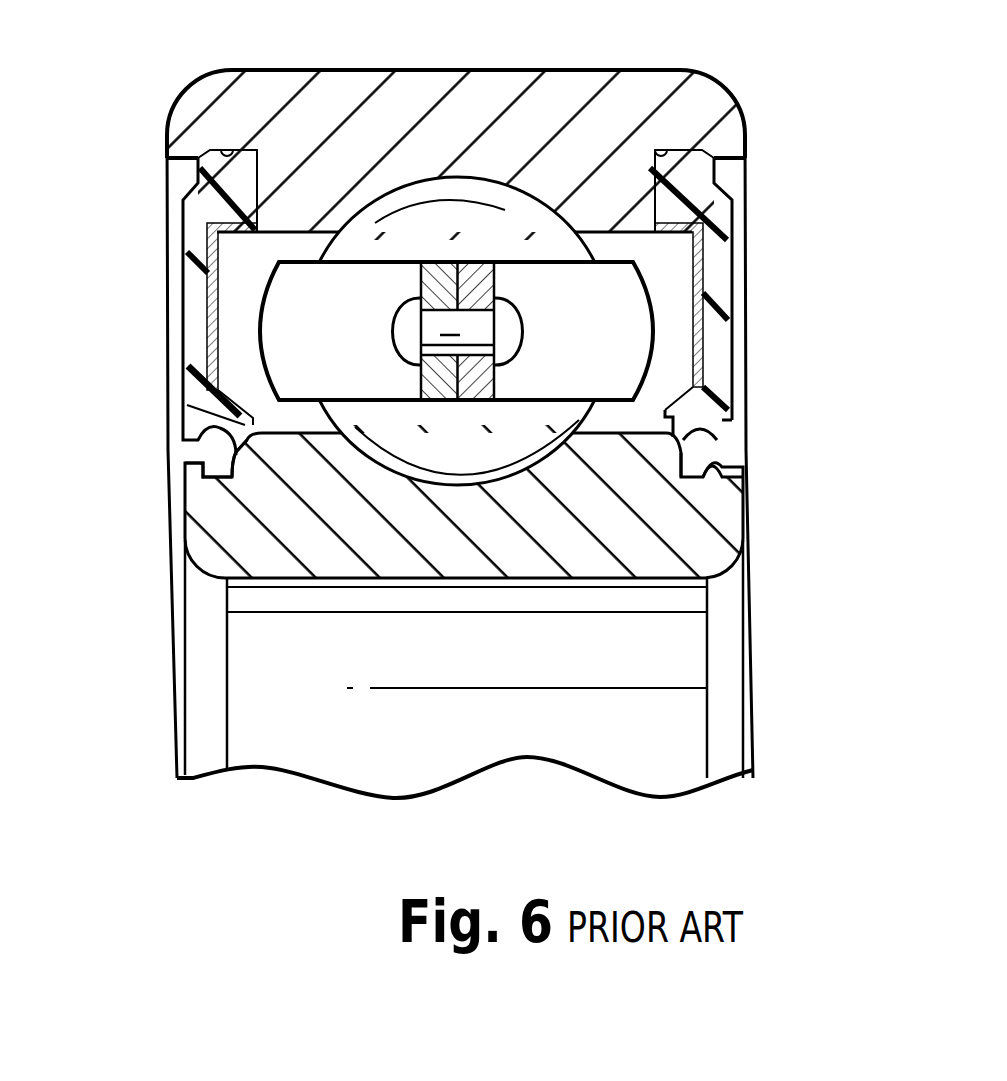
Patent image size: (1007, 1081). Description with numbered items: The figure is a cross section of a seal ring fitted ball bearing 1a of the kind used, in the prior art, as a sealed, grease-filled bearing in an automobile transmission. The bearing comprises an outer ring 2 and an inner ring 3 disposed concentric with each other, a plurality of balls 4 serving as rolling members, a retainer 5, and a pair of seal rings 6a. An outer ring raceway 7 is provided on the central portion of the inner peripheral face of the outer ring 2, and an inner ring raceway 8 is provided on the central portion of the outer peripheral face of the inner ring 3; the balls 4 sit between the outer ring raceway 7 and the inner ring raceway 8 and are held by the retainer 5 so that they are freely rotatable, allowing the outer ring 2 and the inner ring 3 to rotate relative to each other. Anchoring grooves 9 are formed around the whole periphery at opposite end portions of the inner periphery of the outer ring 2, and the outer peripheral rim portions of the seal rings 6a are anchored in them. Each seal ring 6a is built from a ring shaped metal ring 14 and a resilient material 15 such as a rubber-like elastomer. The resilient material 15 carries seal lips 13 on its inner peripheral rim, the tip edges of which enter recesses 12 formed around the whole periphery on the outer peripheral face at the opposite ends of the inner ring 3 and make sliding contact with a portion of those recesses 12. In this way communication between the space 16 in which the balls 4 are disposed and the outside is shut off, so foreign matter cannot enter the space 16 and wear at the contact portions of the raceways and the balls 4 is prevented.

The seal ring fitted ball bearing 1a is at (765, 118).
The outer ring 2 is at (702, 95).
The inner ring 3 is at (735, 553).
The balls 4 is at (523, 217).
The retainer 5 is at (632, 363).
The seal rings 6a is at (190, 227).
The outer ring raceway 7 is at (412, 183).
The inner ring raceway 8 is at (427, 465).
The anchoring grooves 9 is at (228, 150).
The recesses 12 is at (190, 468).
The seal lips 13 is at (190, 543).
The metal rings 14 is at (208, 318).
The resilient material 15 is at (190, 425).
The space 16 is at (240, 278).